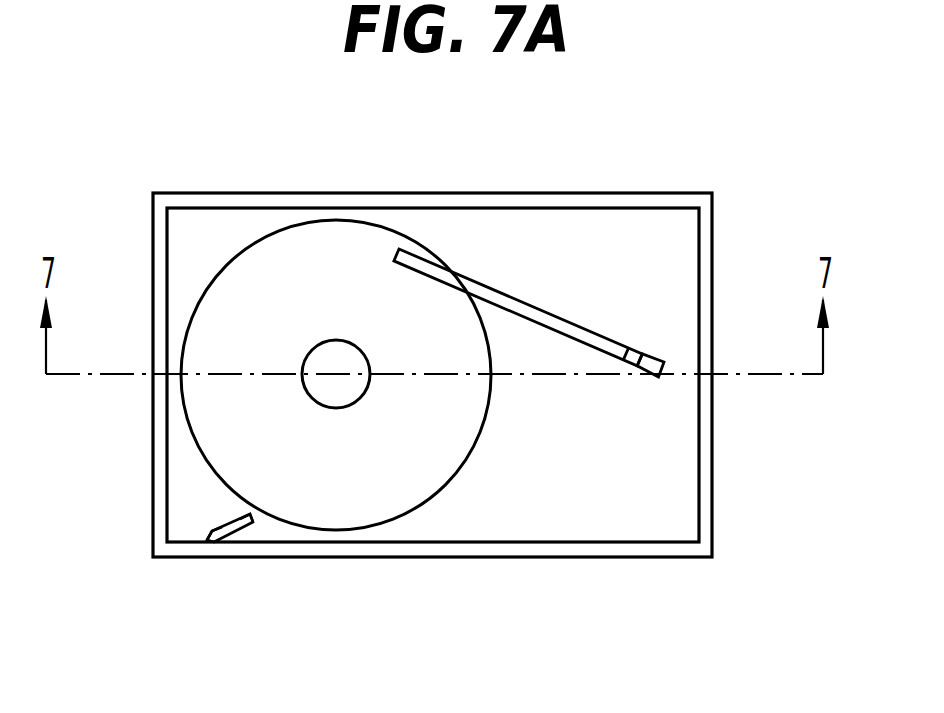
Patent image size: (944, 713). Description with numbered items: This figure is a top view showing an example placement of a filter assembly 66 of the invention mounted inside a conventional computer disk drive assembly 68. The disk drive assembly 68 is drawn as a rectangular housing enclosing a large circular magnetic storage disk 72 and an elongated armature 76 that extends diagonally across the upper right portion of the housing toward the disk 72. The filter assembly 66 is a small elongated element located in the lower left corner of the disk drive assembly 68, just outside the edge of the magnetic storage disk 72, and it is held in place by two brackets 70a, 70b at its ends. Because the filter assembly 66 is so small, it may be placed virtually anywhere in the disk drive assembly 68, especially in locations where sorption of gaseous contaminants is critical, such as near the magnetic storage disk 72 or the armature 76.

The filter assembly 66 is at (215, 527).
The disk drive assembly 68 is at (563, 190).
The bracket 70a is at (211, 543).
The bracket 70b is at (250, 523).
The magnetic storage disk 72 is at (312, 256).
The armature 76 is at (581, 325).